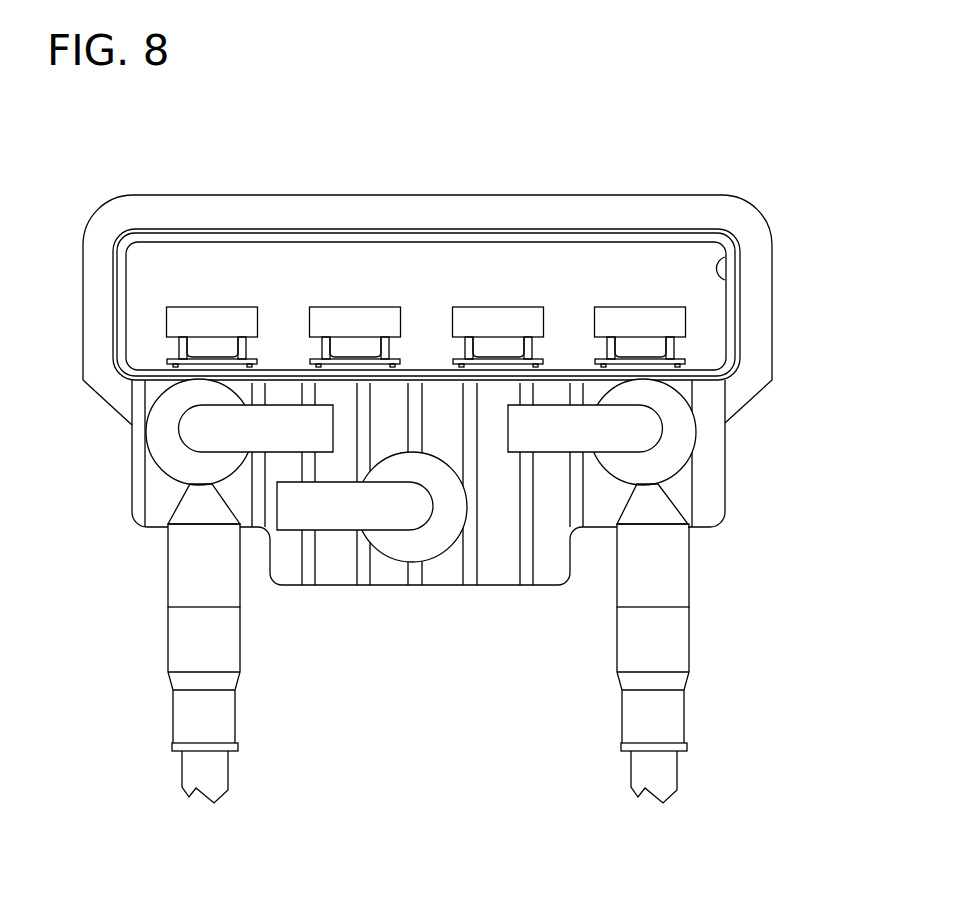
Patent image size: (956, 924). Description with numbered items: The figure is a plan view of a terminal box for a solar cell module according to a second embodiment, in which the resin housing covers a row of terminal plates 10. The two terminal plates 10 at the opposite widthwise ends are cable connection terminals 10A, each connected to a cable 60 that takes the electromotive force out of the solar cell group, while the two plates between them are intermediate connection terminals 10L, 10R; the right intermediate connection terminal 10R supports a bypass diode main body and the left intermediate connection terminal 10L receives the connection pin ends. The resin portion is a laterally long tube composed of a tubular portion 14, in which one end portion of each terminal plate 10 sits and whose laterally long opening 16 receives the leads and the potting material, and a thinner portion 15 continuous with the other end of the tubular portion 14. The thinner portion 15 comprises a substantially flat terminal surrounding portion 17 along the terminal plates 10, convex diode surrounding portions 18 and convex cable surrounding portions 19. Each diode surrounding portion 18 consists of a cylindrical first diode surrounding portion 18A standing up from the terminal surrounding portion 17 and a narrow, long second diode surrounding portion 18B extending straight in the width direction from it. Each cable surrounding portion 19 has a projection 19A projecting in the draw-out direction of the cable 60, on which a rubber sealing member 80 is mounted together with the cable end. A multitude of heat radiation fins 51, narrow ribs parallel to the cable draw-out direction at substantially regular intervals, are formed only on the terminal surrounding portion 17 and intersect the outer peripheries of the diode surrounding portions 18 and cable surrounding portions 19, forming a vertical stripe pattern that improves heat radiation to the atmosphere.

The terminal plate 10 is at (426, 243).
The cable connection terminal 10A is at (215, 313).
The intermediate connection terminal 10L is at (355, 313).
The intermediate connection terminal 10R is at (495, 313).
The tubular portion 14 is at (740, 313).
The thinner portion 15 is at (715, 467).
The opening 16 is at (718, 255).
The terminal surrounding portion 17 is at (502, 568).
The diode surrounding portion 18 is at (433, 529).
The first diode surrounding portion 18A is at (395, 550).
The second diode surrounding portion 18B is at (325, 520).
The cable surrounding portion 19 is at (177, 505).
The projection 19A is at (177, 577).
The heat radiation fin 51 is at (308, 577).
The cable 60 is at (195, 773).
The sealing member 80 is at (180, 640).